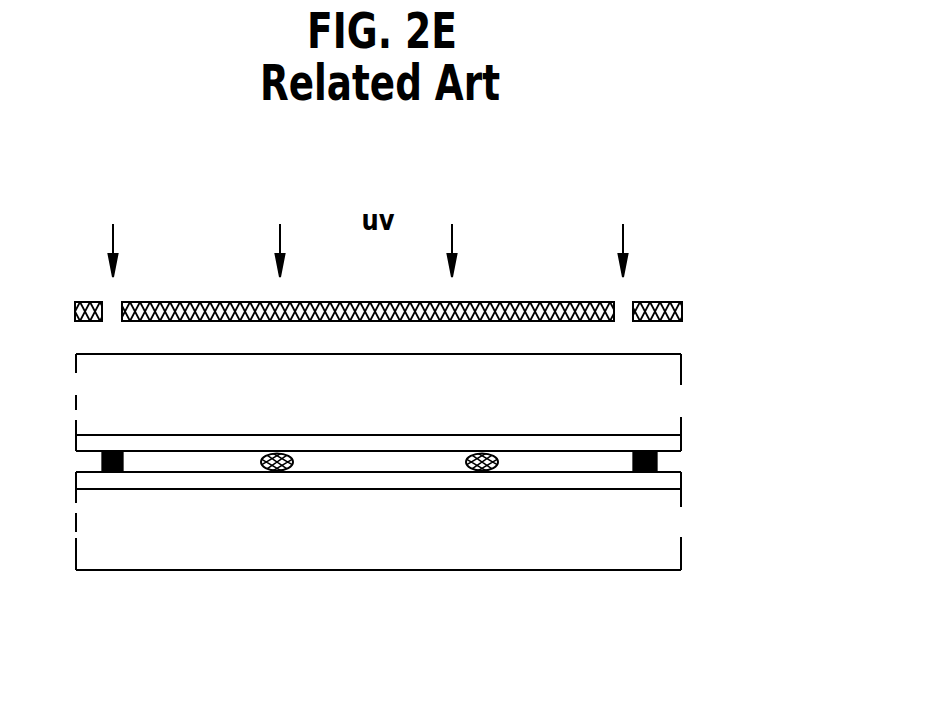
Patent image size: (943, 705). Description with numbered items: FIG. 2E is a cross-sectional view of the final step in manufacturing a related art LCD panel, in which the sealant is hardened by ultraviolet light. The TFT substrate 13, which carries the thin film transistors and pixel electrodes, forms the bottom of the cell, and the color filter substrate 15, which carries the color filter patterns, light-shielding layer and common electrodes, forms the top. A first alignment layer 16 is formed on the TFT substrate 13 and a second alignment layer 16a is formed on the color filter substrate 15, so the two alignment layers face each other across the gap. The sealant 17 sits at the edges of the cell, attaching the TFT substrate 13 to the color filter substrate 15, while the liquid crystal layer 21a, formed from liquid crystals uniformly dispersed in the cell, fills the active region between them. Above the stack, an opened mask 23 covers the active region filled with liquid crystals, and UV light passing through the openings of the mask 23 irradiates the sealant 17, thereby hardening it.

The mask 23 is at (683, 312).
The color filter substrate 15 is at (676, 406).
The second alignment layer 16a is at (676, 449).
The sealant 17 is at (657, 458).
The liquid crystal layer 21a is at (601, 462).
The first alignment layer 16 is at (681, 480).
The thin film transistor (TFT) substrate 13 is at (676, 524).